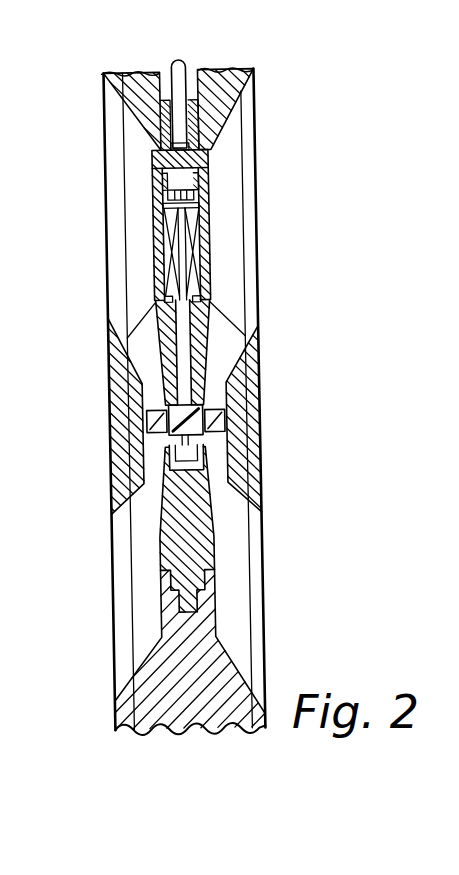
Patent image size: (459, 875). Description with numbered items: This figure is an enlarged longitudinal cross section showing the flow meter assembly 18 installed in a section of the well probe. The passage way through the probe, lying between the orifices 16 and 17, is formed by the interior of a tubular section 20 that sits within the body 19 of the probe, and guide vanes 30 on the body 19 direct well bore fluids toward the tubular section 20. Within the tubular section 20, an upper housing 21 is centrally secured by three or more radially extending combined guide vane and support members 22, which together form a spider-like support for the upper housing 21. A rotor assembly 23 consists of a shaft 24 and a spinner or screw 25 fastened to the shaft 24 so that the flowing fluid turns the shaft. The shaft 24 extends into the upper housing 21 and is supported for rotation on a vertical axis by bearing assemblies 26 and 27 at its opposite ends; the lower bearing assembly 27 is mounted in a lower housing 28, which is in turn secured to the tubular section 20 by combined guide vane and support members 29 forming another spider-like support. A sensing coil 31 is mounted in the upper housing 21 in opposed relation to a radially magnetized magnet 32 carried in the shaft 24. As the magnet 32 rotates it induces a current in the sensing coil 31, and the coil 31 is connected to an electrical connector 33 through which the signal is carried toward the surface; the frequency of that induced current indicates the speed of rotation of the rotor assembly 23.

The orifice 16 is at (253, 172).
The orifice 17 is at (258, 598).
The flow meter assembly 18 is at (272, 431).
The body 19 is at (254, 350).
The tubular section 20 is at (257, 392).
The upper housing 21 is at (208, 248).
The combined guide vane and support members 22 is at (212, 318).
The rotor assembly 23 is at (163, 438).
The shaft 24 is at (185, 343).
The spinner or screw 25 is at (157, 410).
The bearing assembly 26 is at (209, 158).
The lower bearing assembly 27 is at (208, 466).
The lower housing 28 is at (170, 512).
The combined guide vane and support members 29 is at (222, 513).
The guide vanes 30 is at (137, 185).
The sensing coil 31 is at (205, 220).
The radially magnetized magnet 32 is at (183, 224).
The electrical connector 33 is at (181, 60).